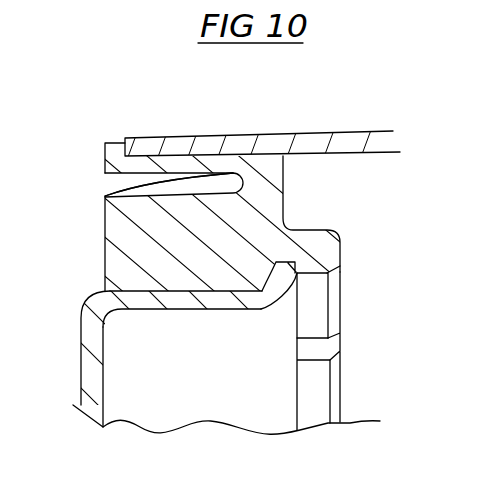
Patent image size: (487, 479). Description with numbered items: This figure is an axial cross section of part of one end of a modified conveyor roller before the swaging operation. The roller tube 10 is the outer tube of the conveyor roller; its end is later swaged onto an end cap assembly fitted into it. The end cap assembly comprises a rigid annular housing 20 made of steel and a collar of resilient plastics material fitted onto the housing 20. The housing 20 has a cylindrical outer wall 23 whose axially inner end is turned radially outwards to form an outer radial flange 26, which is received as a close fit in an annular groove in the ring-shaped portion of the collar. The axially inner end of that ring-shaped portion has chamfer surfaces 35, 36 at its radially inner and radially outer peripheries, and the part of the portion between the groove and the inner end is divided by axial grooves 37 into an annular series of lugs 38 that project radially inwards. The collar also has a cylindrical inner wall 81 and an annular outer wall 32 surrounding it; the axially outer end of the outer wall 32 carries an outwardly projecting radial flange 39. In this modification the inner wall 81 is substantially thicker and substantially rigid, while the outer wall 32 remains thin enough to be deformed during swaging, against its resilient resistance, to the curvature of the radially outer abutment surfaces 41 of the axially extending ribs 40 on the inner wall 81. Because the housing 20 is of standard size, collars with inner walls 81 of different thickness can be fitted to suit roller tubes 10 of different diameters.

The roller tube 10 is at (366, 128).
The outwardly projecting radial flange 39 is at (104, 144).
The annular outer wall 32 is at (180, 165).
The axially extending ribs 40 is at (197, 185).
The radially outer surfaces of the ribs 41 is at (125, 185).
The chamfer surface 36 is at (280, 156).
The cylindrical inner wall 81 is at (102, 252).
The outer radial flange 26 is at (286, 274).
The chamfer surface 35 is at (337, 278).
The lugs 38 is at (322, 294).
The axial grooves 37 is at (333, 343).
The cylindrical outer wall 23 is at (138, 306).
The rigid annular housing 20 is at (103, 362).